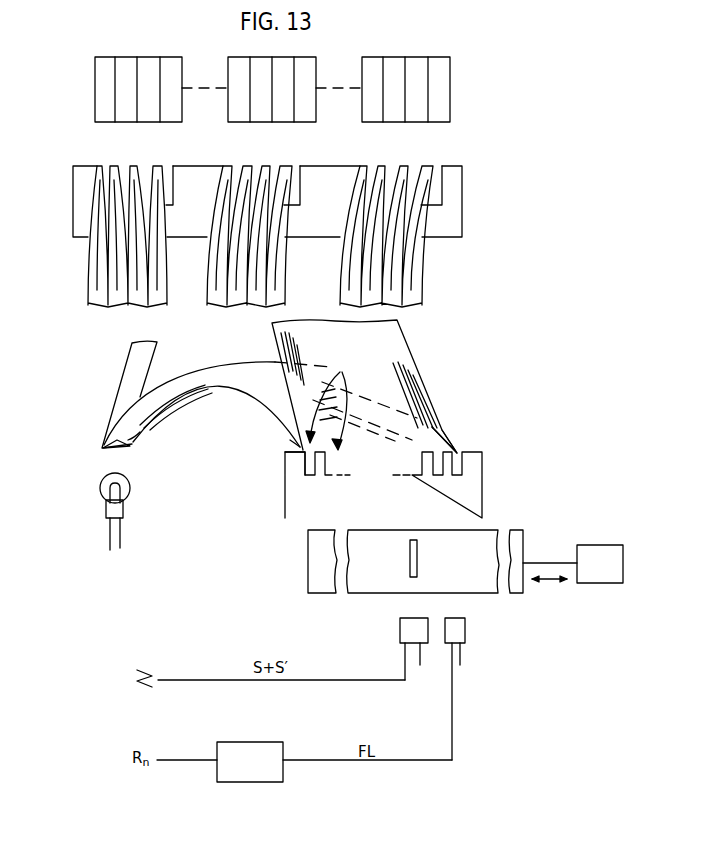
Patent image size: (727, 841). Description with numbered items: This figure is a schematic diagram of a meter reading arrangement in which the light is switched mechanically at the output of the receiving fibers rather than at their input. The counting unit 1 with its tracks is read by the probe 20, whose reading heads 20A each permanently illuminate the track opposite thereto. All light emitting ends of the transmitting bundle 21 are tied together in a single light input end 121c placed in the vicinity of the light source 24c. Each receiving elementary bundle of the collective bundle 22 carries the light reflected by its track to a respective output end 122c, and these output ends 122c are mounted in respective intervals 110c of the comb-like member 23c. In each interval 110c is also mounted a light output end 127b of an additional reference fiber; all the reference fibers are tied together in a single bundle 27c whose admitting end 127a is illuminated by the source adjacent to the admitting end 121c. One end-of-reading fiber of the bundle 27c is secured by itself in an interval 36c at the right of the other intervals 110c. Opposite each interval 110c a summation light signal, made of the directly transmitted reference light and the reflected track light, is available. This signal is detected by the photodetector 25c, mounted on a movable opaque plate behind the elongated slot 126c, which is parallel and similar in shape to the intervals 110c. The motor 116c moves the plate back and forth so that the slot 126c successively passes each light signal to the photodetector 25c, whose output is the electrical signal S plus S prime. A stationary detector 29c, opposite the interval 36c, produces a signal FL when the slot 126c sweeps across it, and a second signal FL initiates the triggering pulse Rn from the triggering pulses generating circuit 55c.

The record carrier segments 1 is at (487, 93).
The probe 20 is at (450, 195).
The reading head 20A is at (432, 167).
The transmitting bundle 21 is at (132, 348).
The light input end 121c is at (102, 443).
The single bundle of reference fibers 27c is at (247, 375).
The admitting end 127a is at (130, 443).
The collective bundle 22 is at (393, 350).
The intervals 110c is at (340, 400).
The interval 36c is at (457, 453).
The comb-like member 23c is at (463, 493).
The output ends 122c is at (288, 455).
The light output end 127b is at (288, 478).
The light source 24c is at (101, 484).
The elongated slot 126c is at (410, 548).
The motor 116c is at (593, 563).
The photodetector 25c is at (415, 630).
The detector 29c is at (455, 630).
The triggering pulses generating circuit 55c is at (283, 767).